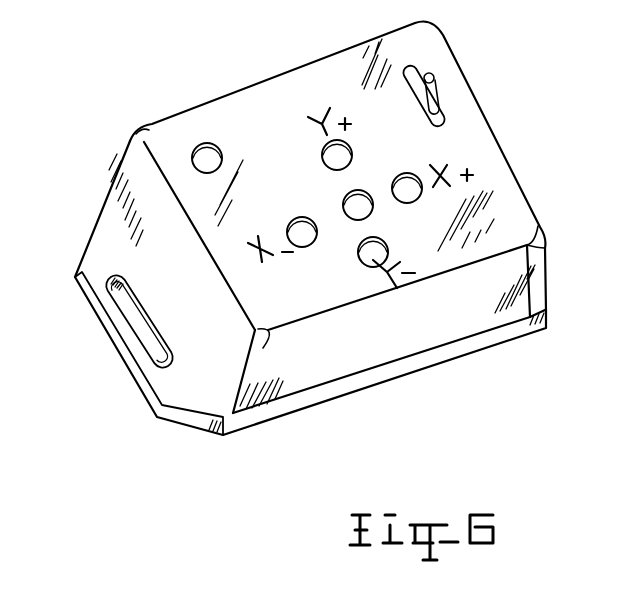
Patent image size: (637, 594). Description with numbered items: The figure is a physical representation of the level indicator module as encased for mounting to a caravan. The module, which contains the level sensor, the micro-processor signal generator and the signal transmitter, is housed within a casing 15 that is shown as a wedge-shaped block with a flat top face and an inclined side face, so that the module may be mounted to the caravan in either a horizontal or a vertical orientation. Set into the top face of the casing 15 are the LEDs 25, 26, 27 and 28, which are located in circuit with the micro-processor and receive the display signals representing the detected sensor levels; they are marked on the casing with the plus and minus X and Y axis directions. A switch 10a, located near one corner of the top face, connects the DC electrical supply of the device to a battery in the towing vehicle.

The casing 15 is at (522, 193).
The LED 27 is at (322, 152).
The LED 26 is at (303, 218).
The LED 25 is at (408, 176).
The LED 28 is at (368, 262).
The switch 10a is at (436, 83).